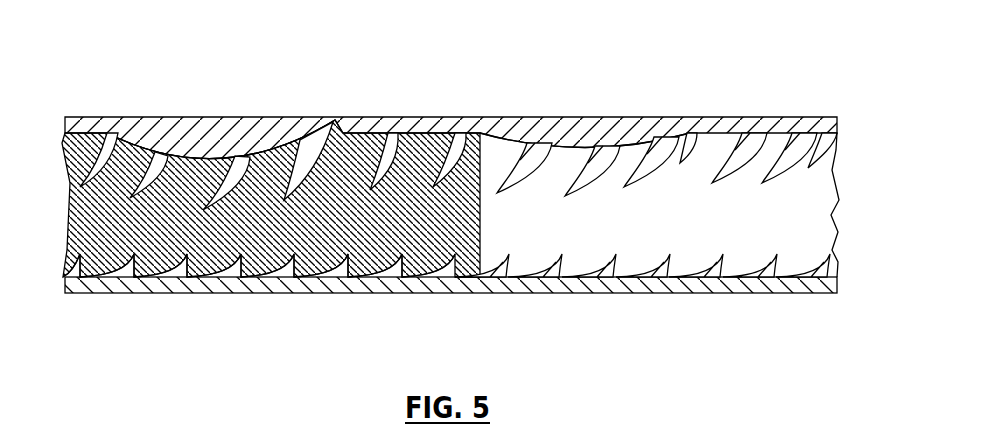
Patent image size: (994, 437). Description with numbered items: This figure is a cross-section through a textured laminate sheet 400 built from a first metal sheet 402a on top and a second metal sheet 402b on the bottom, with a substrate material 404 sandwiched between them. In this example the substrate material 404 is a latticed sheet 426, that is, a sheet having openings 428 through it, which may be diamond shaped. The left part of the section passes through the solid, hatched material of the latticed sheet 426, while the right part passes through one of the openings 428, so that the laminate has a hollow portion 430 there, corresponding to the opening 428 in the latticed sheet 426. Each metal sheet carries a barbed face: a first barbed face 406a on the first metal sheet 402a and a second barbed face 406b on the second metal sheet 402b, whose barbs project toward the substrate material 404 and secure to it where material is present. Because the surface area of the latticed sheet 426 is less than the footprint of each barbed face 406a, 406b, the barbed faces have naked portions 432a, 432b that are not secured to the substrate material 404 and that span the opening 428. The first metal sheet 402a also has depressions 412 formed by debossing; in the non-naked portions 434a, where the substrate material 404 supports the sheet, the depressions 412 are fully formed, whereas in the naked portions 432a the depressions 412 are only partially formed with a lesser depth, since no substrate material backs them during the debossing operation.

The textured laminate sheet 400 is at (590, 53).
The first metal sheet 402a is at (748, 133).
The second metal sheet 402b is at (778, 288).
The substrate material 404 is at (315, 273).
The first barbed face 406a is at (800, 158).
The second barbed face 406b is at (805, 255).
The depressions 412 is at (278, 126).
The latticed sheet 426 is at (432, 273).
The openings 428 is at (775, 212).
The hollow portions 430 is at (581, 258).
The first naked portions 432a is at (693, 158).
The second naked portions 432b is at (690, 266).
The non-naked portions 434a is at (386, 131).